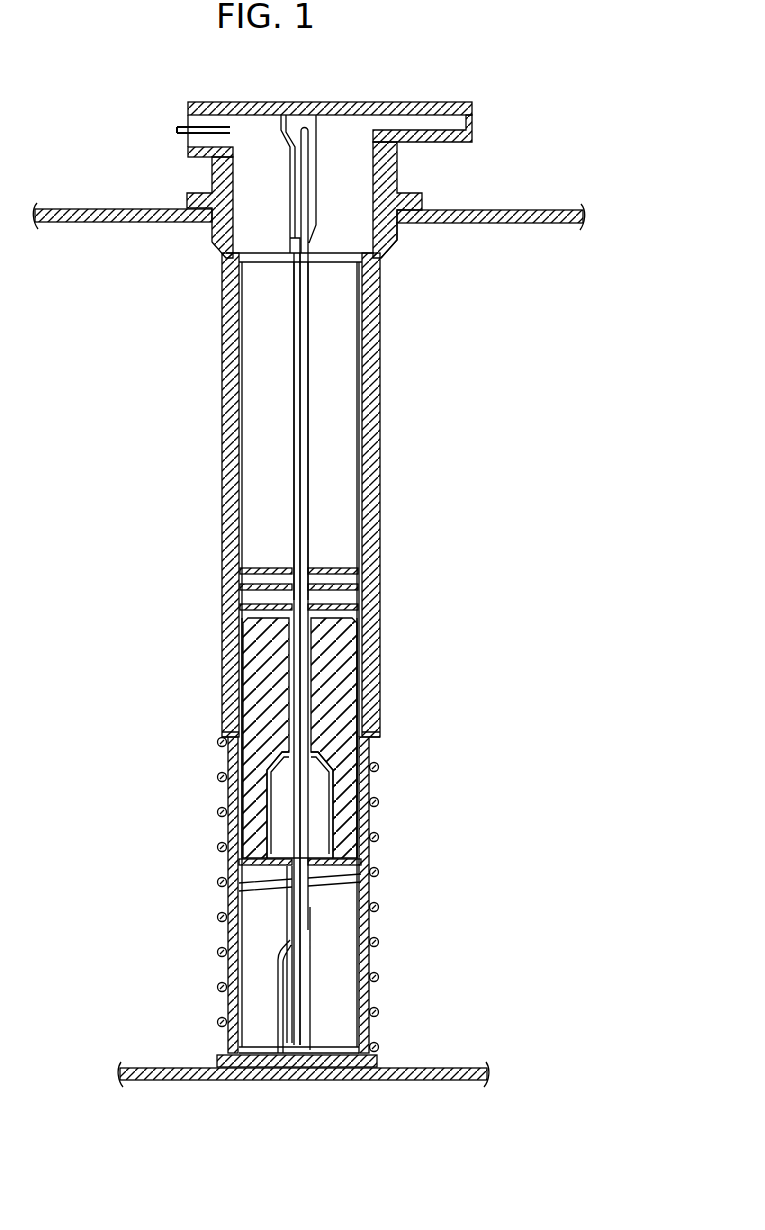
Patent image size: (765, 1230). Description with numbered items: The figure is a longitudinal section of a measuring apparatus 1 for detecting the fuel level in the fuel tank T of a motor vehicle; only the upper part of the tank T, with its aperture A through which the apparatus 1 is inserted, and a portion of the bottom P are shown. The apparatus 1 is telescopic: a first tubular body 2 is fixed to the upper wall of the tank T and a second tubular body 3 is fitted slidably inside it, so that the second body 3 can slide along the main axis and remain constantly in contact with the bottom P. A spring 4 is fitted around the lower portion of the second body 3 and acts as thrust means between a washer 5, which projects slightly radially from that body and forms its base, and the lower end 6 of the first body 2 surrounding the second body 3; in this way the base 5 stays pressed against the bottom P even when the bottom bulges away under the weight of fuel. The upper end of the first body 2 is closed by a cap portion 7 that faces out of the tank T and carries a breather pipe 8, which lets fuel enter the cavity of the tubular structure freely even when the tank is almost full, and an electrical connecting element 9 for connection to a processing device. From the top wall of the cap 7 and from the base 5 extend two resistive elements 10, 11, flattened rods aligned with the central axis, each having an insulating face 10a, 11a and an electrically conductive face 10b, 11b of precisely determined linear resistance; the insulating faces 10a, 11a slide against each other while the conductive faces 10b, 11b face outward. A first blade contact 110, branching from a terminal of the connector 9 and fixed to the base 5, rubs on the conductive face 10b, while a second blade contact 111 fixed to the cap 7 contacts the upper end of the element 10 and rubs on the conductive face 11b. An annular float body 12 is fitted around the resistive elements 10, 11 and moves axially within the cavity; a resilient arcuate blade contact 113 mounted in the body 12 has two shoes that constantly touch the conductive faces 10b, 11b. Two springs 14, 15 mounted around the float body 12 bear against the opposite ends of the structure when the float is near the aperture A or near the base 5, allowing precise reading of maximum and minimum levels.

The measuring apparatus 1 is at (477, 428).
The first tubular body 2 is at (222, 244).
The second tubular body 3 is at (240, 856).
The spring 4 is at (216, 917).
The washer 5 is at (306, 1068).
The lower end of the body 2 6 is at (219, 742).
The cap portion 7 is at (343, 98).
The breather pipe 8 is at (466, 122).
The electrical connecting element 9 is at (183, 142).
The resistive element 10 is at (300, 484).
The insulating face 10a is at (297, 451).
The electrically conductive face 10b is at (292, 378).
The resistive element 11 is at (306, 313).
The insulating face 11a is at (310, 435).
The electrically conductive face 11b is at (312, 384).
The annular body 12 is at (346, 656).
The spring 14 is at (240, 590).
The spring 15 is at (268, 806).
The first blade contact 110 is at (262, 984).
The second blade contact 111 is at (291, 190).
The electrical blade contact 113 is at (336, 816).
The aperture A is at (402, 237).
The fuel tank T is at (62, 224).
The bottom P is at (146, 1080).